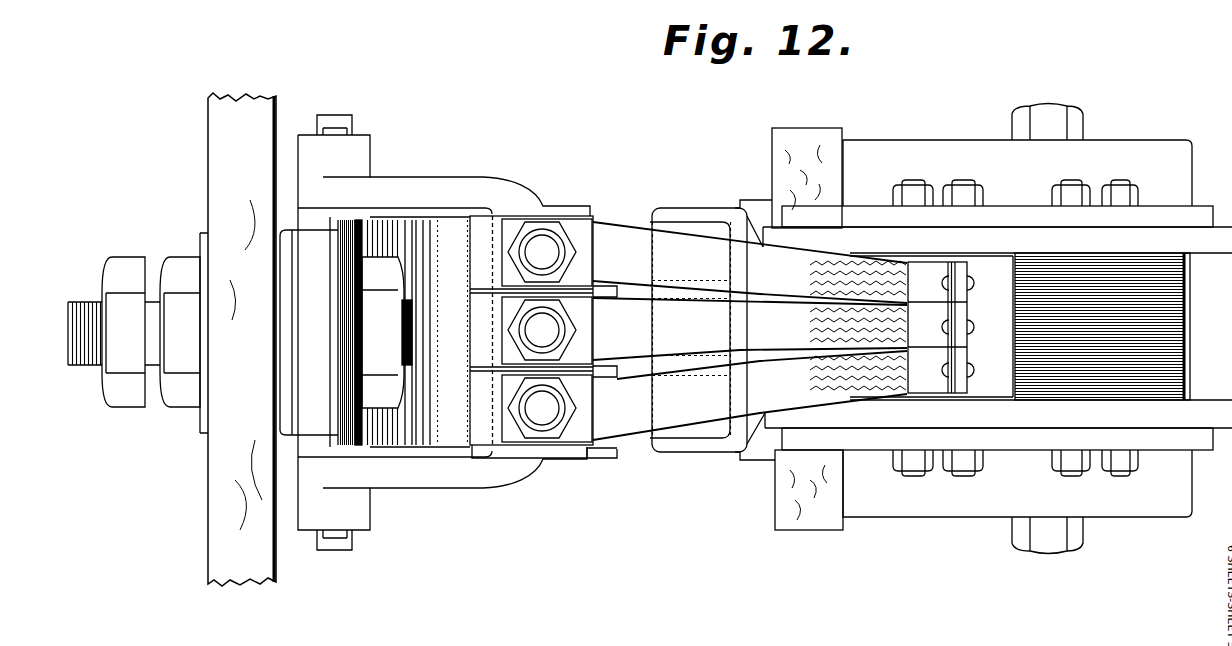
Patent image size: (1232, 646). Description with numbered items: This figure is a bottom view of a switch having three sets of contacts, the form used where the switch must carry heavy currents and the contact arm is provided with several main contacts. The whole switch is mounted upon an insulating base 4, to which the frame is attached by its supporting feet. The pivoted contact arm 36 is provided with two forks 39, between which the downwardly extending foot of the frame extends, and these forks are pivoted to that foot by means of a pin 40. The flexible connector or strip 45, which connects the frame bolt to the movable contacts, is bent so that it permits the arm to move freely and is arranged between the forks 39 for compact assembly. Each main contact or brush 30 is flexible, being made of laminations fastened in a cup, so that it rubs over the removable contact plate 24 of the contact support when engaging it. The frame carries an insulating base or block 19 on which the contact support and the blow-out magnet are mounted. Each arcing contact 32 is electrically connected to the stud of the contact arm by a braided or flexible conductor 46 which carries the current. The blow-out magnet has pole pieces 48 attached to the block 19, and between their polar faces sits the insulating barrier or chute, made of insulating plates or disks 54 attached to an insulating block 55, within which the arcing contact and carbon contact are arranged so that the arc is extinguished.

The insulating base 4 is at (242, 339).
The insulating base or block 19 is at (807, 329).
The removable contact plate 24 is at (736, 210).
The main contact or brush 30 is at (632, 219).
The arcing contact 32 is at (960, 307).
The pivoted contact arm 36 is at (580, 450).
The forks 39 is at (448, 343).
The pin 40 is at (342, 549).
The flexible connector or strip 45 is at (424, 220).
The braided or flexible conductor 46 is at (750, 331).
The pole pieces 48 is at (1148, 212).
The insulating plates or disks 54 is at (997, 327).
The insulating block 55 is at (1196, 372).